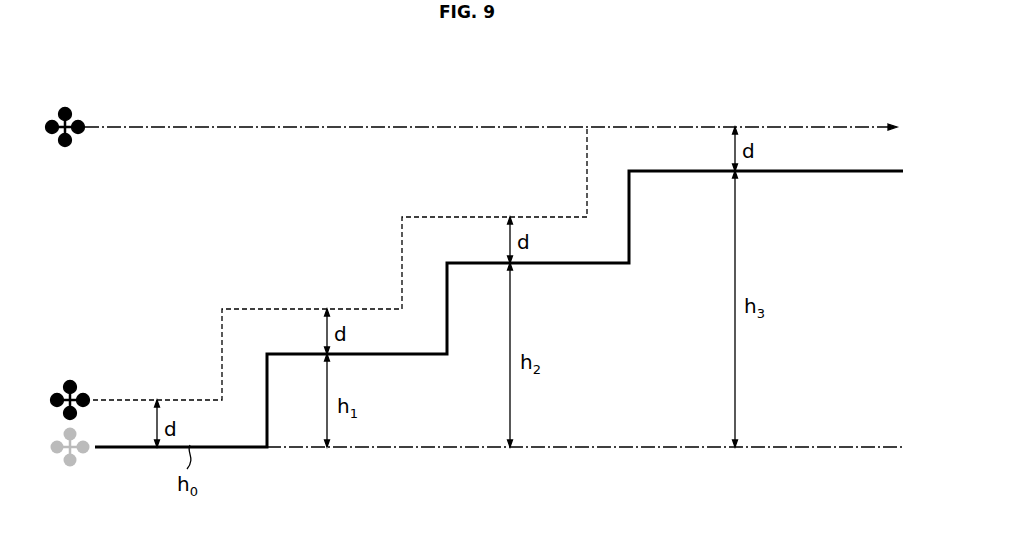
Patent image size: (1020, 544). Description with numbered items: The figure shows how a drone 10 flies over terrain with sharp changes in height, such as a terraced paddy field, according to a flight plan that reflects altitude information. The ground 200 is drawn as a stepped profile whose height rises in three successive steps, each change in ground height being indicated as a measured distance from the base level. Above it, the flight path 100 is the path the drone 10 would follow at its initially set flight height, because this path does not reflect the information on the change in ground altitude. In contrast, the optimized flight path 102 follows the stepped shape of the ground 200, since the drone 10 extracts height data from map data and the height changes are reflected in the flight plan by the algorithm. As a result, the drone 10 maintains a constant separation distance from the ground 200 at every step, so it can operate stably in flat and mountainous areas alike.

The flight path 100 is at (173, 127).
The optimized flight path 102 is at (456, 216).
The drone 10 is at (70, 387).
The ground 200 is at (240, 449).